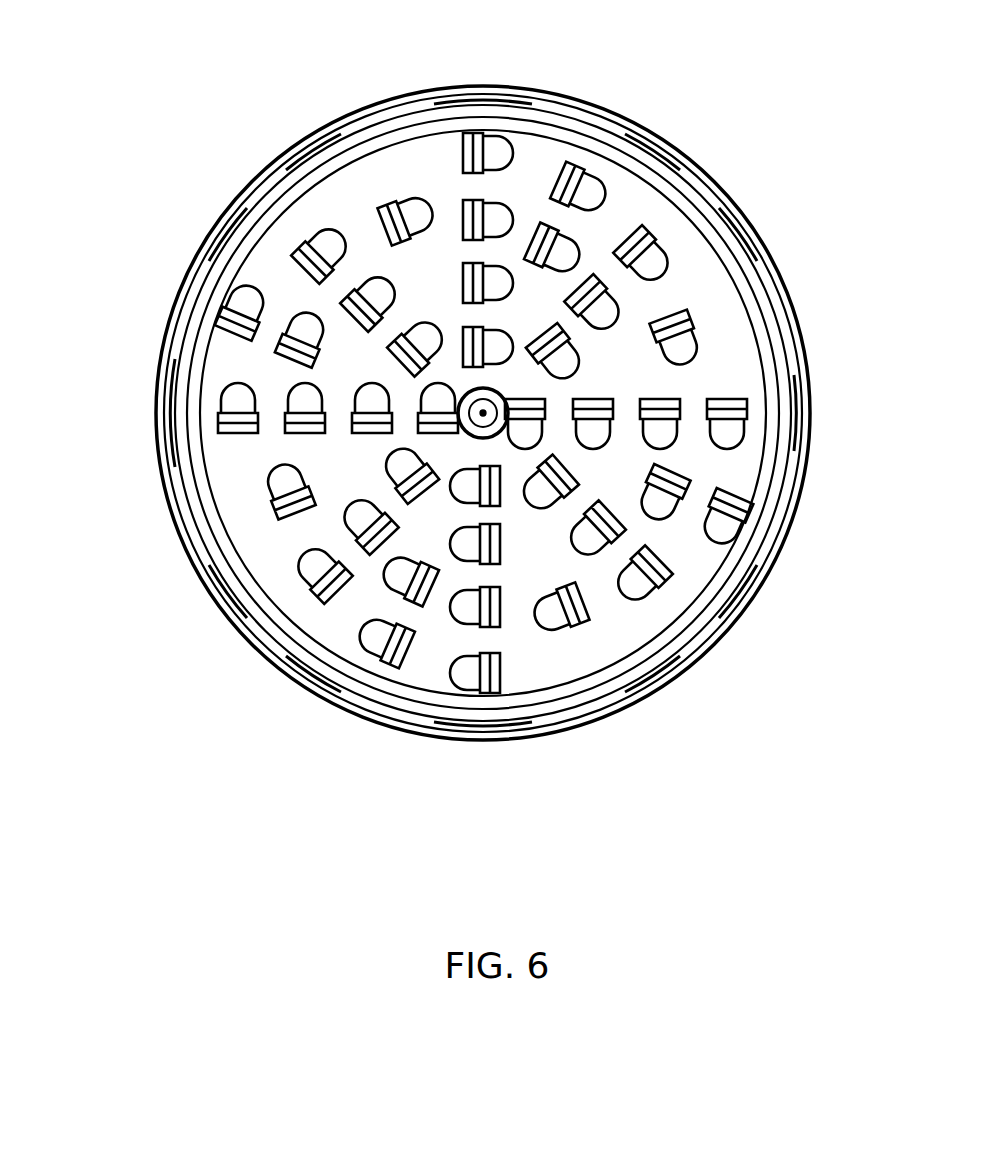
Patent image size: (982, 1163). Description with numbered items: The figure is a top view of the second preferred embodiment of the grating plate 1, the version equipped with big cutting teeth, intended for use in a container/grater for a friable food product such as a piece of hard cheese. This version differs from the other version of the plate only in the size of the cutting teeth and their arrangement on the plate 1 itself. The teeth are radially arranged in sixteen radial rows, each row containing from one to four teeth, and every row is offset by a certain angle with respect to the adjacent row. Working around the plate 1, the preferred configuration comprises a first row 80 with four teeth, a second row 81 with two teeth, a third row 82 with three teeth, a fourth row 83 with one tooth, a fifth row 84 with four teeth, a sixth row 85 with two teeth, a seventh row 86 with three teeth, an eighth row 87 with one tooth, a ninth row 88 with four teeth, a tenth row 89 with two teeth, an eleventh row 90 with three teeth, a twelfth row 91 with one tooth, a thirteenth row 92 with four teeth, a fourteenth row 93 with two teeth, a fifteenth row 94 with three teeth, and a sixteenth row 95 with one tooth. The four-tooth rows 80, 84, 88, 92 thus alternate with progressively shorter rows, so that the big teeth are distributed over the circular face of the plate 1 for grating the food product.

The grating plate 1 is at (632, 195).
The first row 80 is at (682, 408).
The second row 81 is at (683, 493).
The third row 82 is at (592, 545).
The fourth row 83 is at (556, 614).
The fifth row 84 is at (488, 622).
The sixth row 85 is at (375, 630).
The seventh row 86 is at (358, 537).
The eighth row 87 is at (272, 495).
The ninth row 88 is at (303, 408).
The tenth row 89 is at (172, 322).
The eleventh row 90 is at (370, 292).
The twelfth row 91 is at (392, 215).
The thirteenth row 92 is at (472, 200).
The fourteenth row 93 is at (571, 168).
The fifteenth row 94 is at (608, 290).
The sixteenth row 95 is at (677, 347).